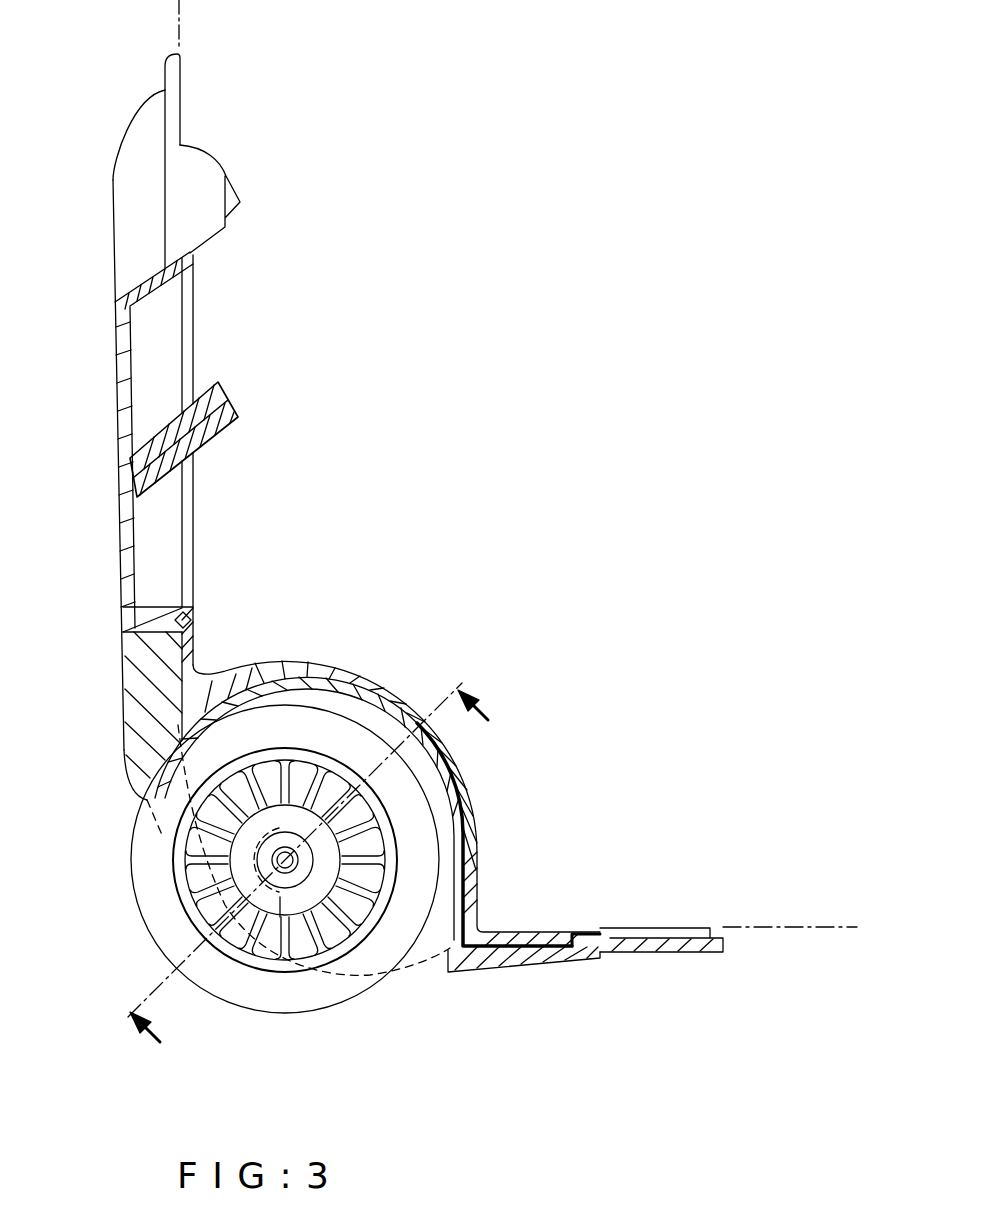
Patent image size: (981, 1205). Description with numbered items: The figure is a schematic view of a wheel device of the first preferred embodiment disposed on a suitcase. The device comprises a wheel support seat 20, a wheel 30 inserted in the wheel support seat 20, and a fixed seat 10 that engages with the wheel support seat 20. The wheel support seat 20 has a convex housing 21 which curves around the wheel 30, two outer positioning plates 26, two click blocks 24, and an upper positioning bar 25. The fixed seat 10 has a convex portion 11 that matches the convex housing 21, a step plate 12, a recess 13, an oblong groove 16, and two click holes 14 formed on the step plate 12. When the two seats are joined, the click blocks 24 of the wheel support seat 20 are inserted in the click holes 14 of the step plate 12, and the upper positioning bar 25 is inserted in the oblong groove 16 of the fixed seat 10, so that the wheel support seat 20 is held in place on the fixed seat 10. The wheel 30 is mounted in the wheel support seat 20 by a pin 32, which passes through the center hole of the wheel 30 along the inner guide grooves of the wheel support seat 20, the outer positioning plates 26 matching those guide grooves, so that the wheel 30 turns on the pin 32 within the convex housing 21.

The fixed seat 10 is at (116, 377).
The convex portion 11 is at (340, 677).
The step plate 12 is at (518, 934).
The recess 13 is at (667, 938).
The click holes 14 is at (562, 937).
The oblong groove 16 is at (172, 610).
The wheel support seat 20 is at (133, 720).
The convex housing 21 is at (383, 707).
The click blocks 24 is at (594, 932).
The upper positioning bar 25 is at (191, 621).
The outer positioning plates 26 is at (286, 895).
The wheel 30 is at (138, 904).
The pin 32 is at (297, 862).